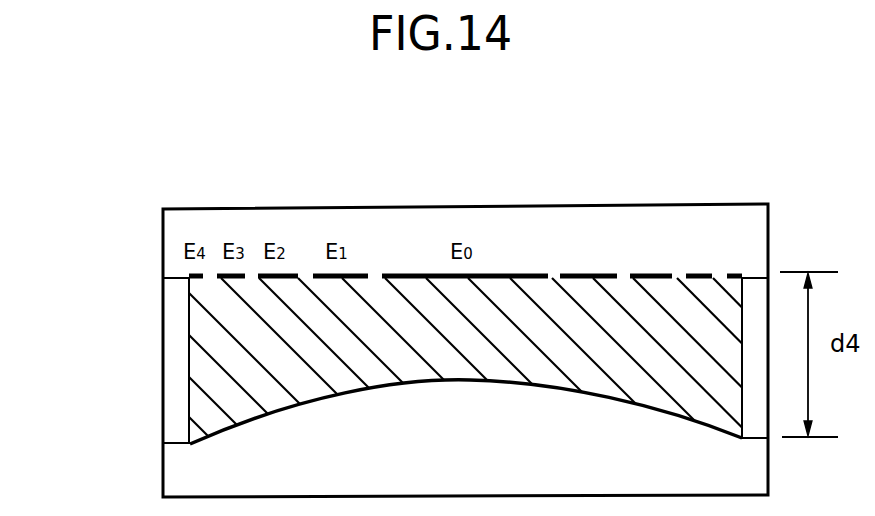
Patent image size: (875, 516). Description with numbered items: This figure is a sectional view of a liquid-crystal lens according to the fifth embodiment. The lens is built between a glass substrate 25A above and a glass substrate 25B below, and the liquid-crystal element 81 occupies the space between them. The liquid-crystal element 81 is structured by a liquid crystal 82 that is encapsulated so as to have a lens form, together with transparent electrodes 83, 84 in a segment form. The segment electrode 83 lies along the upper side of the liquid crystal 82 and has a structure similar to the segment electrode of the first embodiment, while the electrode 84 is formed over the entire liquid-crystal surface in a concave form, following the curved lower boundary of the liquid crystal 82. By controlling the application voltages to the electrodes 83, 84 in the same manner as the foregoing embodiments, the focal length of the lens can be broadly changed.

The glass substrate 25A is at (752, 245).
The glass substrate 25B is at (755, 478).
The liquid-crystal element 81 is at (137, 280).
The liquid crystal 82 is at (520, 298).
The segment electrode 83 is at (579, 273).
The electrode 84 is at (600, 402).